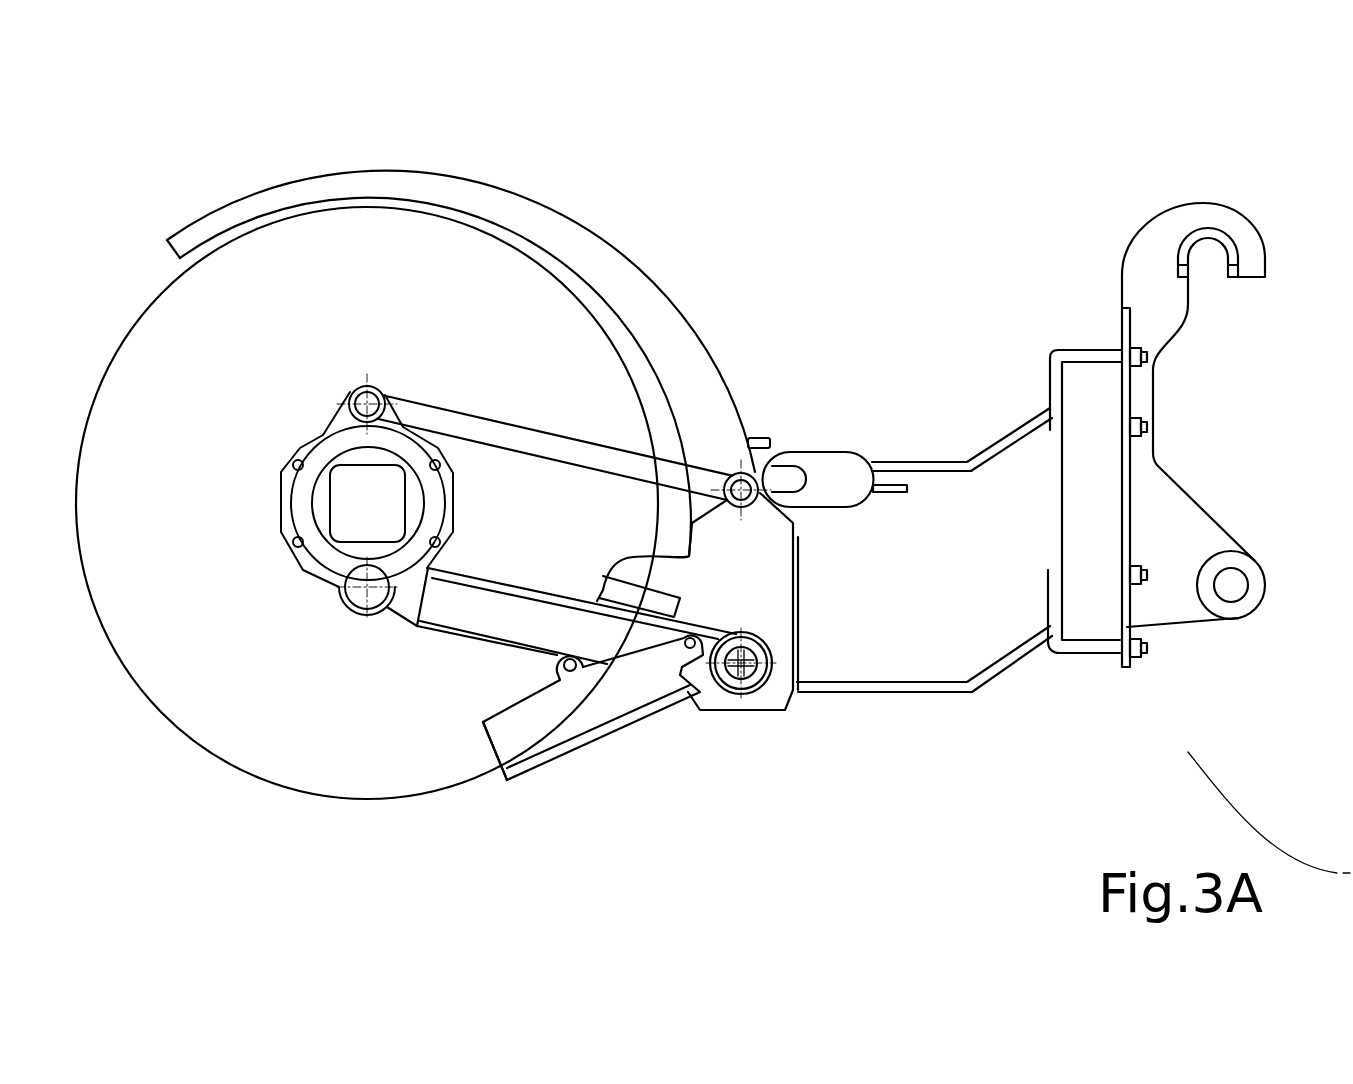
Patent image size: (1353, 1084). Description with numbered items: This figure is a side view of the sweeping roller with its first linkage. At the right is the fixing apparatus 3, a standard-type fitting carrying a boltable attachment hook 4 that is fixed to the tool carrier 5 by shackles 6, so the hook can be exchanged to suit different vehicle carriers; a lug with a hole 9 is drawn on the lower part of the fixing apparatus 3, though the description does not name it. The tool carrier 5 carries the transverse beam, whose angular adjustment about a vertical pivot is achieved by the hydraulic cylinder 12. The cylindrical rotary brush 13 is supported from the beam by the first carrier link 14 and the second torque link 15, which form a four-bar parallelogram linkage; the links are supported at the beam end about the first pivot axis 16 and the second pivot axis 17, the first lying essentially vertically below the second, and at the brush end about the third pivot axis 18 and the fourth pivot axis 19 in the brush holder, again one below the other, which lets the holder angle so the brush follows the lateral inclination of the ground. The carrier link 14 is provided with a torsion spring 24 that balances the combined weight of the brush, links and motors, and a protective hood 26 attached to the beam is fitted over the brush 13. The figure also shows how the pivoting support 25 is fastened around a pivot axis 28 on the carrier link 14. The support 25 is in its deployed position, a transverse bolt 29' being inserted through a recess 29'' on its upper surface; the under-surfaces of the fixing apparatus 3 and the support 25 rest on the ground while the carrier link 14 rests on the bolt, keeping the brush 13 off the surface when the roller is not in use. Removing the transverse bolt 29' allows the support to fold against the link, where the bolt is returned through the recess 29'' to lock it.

The fixing apparatus 3 is at (1182, 411).
The boltable attachment hooks 4 is at (1208, 217).
The tool carrier 5 is at (1015, 467).
The shackles 6 is at (1090, 350).
The hole 9 is at (1232, 590).
The hydraulic cylinder 12 is at (823, 462).
The cylindrical rotary brush 13 is at (156, 676).
The first carrier link 14 is at (493, 625).
The second torque link 15 is at (530, 440).
The first pivot axis 16 is at (762, 686).
The second pivot axis 17 is at (742, 480).
The third pivot axis 18 is at (353, 600).
The fourth pivot axis 19 is at (380, 388).
The torsion spring 24 is at (790, 699).
The folding support 25 is at (603, 713).
The protective hood 26 is at (286, 197).
The pivot axis 28 is at (693, 650).
The transverse bolt 29' is at (606, 793).
The recess 29'' is at (466, 798).